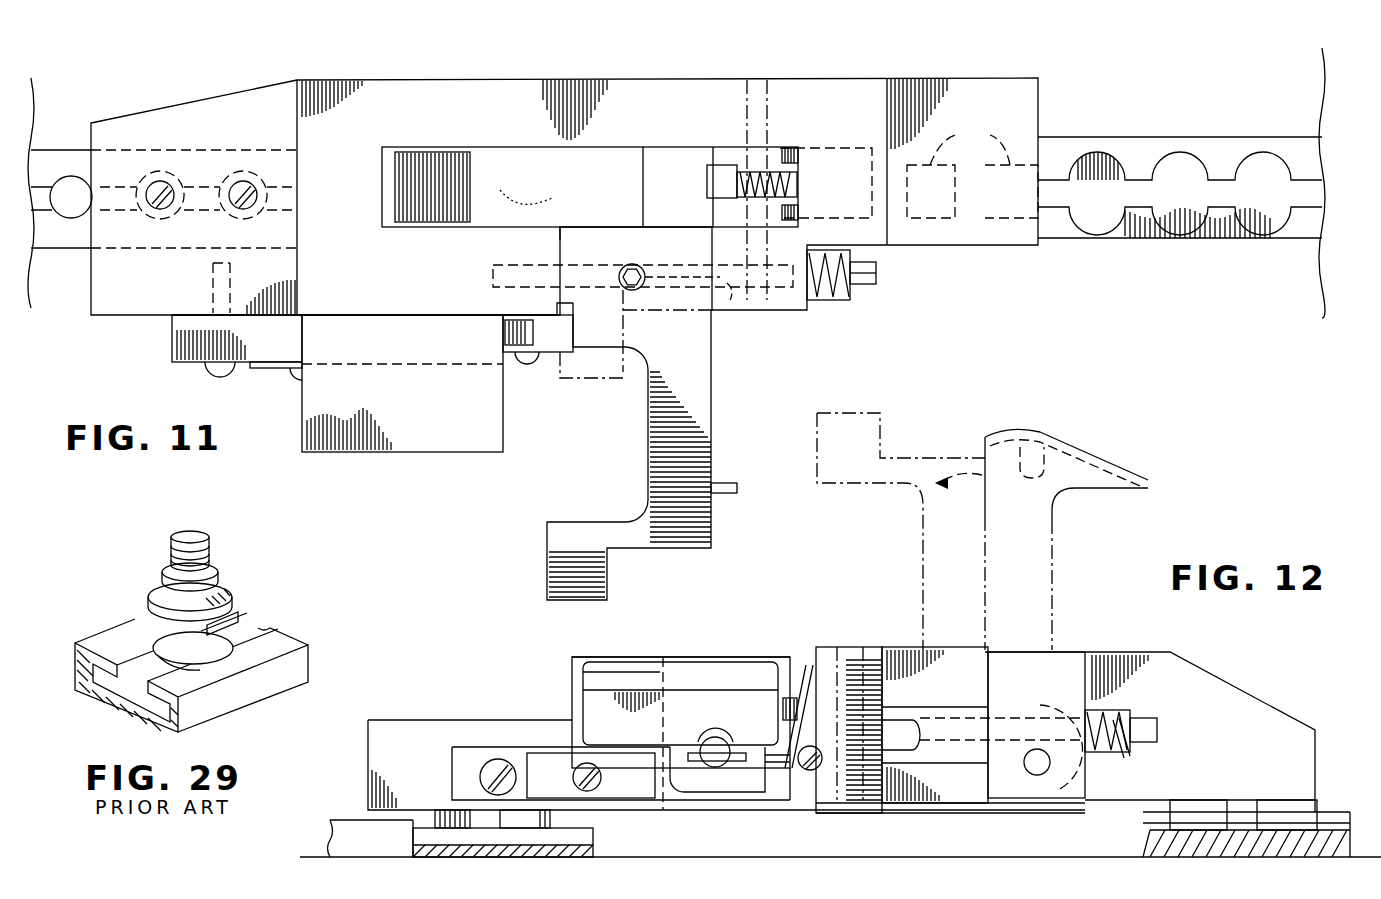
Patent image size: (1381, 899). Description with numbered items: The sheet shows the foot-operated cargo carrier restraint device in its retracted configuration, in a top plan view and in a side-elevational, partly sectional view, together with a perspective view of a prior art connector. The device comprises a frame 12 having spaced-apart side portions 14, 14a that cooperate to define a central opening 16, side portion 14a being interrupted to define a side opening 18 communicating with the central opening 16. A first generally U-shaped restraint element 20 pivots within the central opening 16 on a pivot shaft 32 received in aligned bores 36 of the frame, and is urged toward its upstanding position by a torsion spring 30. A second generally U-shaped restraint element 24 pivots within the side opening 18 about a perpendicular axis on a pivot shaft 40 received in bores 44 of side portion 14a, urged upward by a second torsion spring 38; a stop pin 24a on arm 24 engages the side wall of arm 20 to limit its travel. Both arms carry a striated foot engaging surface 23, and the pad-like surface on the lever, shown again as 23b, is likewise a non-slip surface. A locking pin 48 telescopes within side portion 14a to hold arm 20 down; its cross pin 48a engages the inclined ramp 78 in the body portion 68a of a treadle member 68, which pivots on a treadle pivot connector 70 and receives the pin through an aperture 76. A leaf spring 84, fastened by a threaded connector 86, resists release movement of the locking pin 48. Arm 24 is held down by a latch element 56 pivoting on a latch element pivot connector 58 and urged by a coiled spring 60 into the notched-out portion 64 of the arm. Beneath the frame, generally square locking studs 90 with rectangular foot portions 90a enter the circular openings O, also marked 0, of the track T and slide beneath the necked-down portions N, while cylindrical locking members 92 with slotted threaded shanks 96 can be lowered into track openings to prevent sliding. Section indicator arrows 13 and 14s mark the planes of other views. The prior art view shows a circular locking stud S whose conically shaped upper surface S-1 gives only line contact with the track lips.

In FIG. 11, the frame 12 is at (402, 54).
In FIG. 12, the frame 12 is at (1085, 625).
In FIG. 11, the side portion 14 is at (583, 85).
In FIG. 12, the side portion 14 is at (841, 731).
In FIG. 11, the side portion 14a is at (440, 304).
In FIG. 11, the central opening 16 is at (613, 150).
In FIG. 11, the side opening 18 is at (560, 245).
In FIG. 12, the side opening 18 is at (985, 665).
In FIG. 11, the first restraint element 20 is at (490, 172).
In FIG. 12, the first restraint element 20 is at (1060, 543).
In FIG. 11, the striated foot engaging surface 23 is at (418, 152).
In FIG. 12, the striated foot engaging surface 23 is at (849, 805).
In FIG. 11, the second restraint element 24 is at (708, 432).
In FIG. 12, the second restraint element 24 is at (892, 694).
In FIG. 11, the stop pin 24a is at (735, 494).
In FIG. 11, the torsion spring 30 is at (707, 182).
In FIG. 11, the pivot shaft 32 is at (771, 110).
In FIG. 12, the pivot shaft 32 is at (1050, 805).
In FIG. 12, the bores 36 is at (1037, 748).
In FIG. 11, the second torsion spring 38 is at (838, 292).
In FIG. 12, the second torsion spring 38 is at (1105, 712).
In FIG. 11, the pivot shaft 40 is at (878, 280).
In FIG. 12, the pivot shaft 40 is at (1158, 727).
In FIG. 11, the bores 44 is at (493, 268).
In FIG. 12, the locking pin 48 is at (708, 746).
In FIG. 12, the cross pin 48a is at (738, 752).
In FIG. 11, the latch element 56 is at (517, 368).
In FIG. 12, the latch element 56 is at (800, 660).
In FIG. 12, the latch element pivot connector 58 is at (811, 772).
In FIG. 11, the coiled spring 60 is at (503, 333).
In FIG. 12, the coiled spring 60 is at (787, 698).
In FIG. 11, the notched-out portion 64 is at (568, 350).
In FIG. 11, the treadle member 68 is at (415, 460).
In FIG. 12, the treadle member 68 is at (570, 697).
In FIG. 11, the body portion 68a is at (172, 345).
In FIG. 12, the body portion 68a is at (583, 672).
In FIG. 11, the treadle pivot connector 70 is at (218, 372).
In FIG. 12, the treadle pivot connector 70 is at (480, 775).
In FIG. 12, the aperture 76 is at (716, 734).
In FIG. 12, the inclined ramp 78 is at (762, 778).
In FIG. 11, the leaf spring 84 is at (270, 370).
In FIG. 12, the leaf spring 84 is at (625, 792).
In FIG. 12, the threaded connector 86 is at (580, 768).
In FIG. 11, the locking studs 90 is at (909, 167).
In FIG. 12, the locking studs 90 is at (1287, 800).
In FIG. 12, the foot portions 90a is at (415, 845).
In FIG. 12, the locking members 92 is at (458, 830).
In FIG. 11, the threaded shank 96 is at (240, 185).
In FIG. 11, the section line 13 is at (714, 269).
In FIG. 12, the section lines 14 and 16 14s is at (756, 734).
In FIG. 11, the pad on lever 23b is at (547, 575).
In FIG. 11, the track T is at (63, 150).
In FIG. 12, the track T is at (1333, 810).
In FIG. 11, the openings 0 is at (70, 220).
In FIG. 29, the openings O is at (156, 636).
In FIG. 29, the necked-down portions N is at (110, 635).
In FIG. 29, the prior art locking stud S is at (220, 543).
In FIG. 29, the conically shaped upper surface S-1 is at (227, 585).